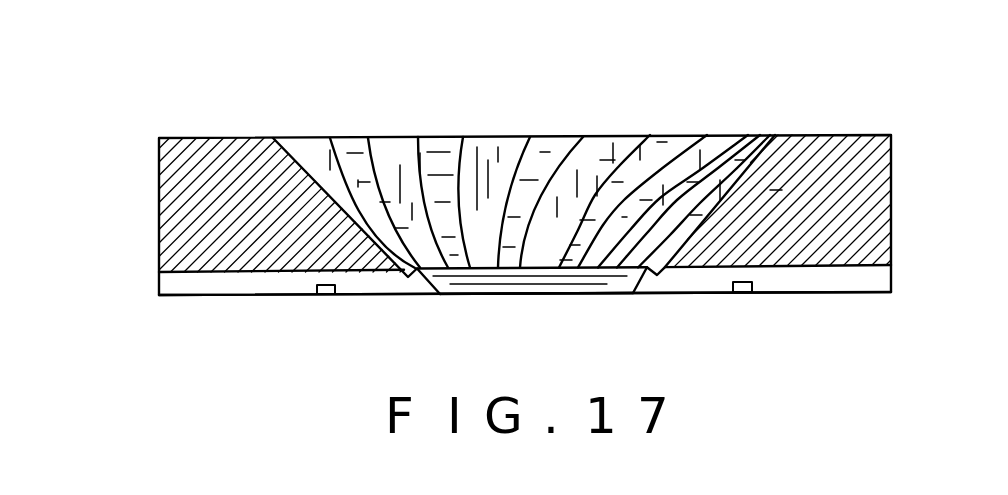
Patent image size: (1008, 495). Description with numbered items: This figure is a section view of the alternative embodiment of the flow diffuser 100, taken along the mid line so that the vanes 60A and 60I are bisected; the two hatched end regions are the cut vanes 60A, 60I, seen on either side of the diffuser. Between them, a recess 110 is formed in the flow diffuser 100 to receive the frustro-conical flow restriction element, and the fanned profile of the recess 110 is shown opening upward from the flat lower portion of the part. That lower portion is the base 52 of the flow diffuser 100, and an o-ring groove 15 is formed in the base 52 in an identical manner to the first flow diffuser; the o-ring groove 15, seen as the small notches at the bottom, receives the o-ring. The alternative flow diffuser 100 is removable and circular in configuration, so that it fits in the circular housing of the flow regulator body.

The flow diffuser 100 is at (140, 233).
The vane 60A is at (228, 183).
The vane 60I is at (835, 178).
The recess 110 is at (318, 168).
The base 52 is at (234, 282).
The o-ring groove 15 is at (330, 296).